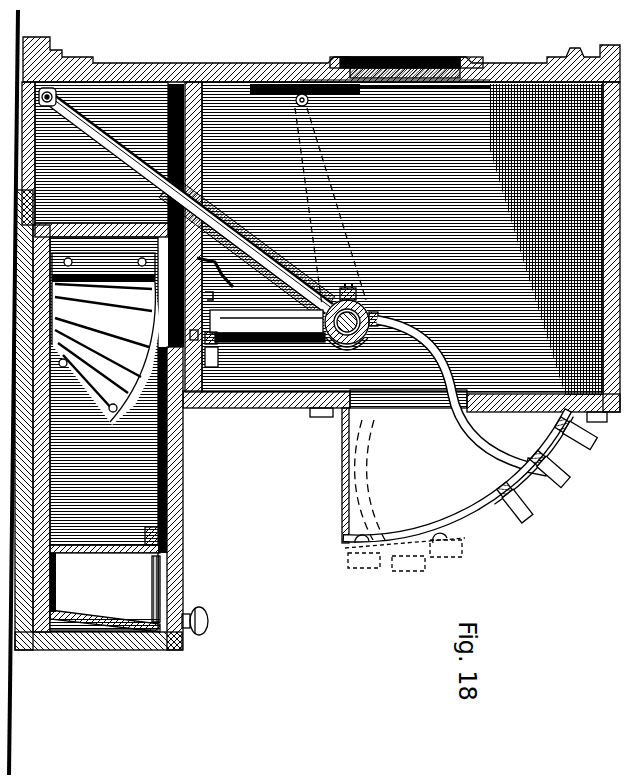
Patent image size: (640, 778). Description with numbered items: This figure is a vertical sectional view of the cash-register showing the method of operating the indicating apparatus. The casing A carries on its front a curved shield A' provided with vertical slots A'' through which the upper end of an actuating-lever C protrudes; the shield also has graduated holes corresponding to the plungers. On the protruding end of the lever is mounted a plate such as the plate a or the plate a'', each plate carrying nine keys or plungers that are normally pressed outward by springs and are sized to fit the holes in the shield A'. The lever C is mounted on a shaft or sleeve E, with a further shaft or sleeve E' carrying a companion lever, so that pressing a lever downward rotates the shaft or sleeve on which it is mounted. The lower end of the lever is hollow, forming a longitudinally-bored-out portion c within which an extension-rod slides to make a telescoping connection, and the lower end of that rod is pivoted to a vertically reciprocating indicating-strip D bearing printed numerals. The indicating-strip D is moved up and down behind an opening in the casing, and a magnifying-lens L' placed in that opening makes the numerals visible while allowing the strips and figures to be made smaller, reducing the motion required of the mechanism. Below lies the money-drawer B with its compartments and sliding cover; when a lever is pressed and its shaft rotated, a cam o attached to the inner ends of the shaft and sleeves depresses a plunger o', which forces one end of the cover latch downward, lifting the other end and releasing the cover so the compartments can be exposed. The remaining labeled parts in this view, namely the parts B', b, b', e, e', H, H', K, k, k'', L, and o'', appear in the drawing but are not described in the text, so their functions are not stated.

The casing A is at (410, 252).
The curved shield A' is at (457, 475).
The vertical slots A'' is at (405, 562).
The plate a is at (395, 56).
The plate a'' is at (533, 488).
The money-drawer B is at (180, 366).
The plate compartment B' is at (101, 384).
The stop blocks b is at (551, 472).
The springs b' is at (543, 475).
The actuating-lever C is at (484, 450).
The longitudinally-bored-out portion c is at (267, 250).
The indicating-strip D is at (229, 82).
The shaft or sleeve E is at (335, 475).
The shaft or sleeve E' is at (348, 386).
The clamp e is at (221, 344).
The clamp block e' is at (214, 368).
The plate holder H is at (105, 588).
The plate changing fan H' is at (106, 339).
The block K is at (175, 537).
The catch k is at (195, 380).
The collar k'' is at (380, 363).
The knob L is at (206, 621).
The magnifying-lens L' is at (454, 50).
The cam o is at (364, 375).
The plunger o' is at (195, 246).
The bar o'' is at (270, 391).